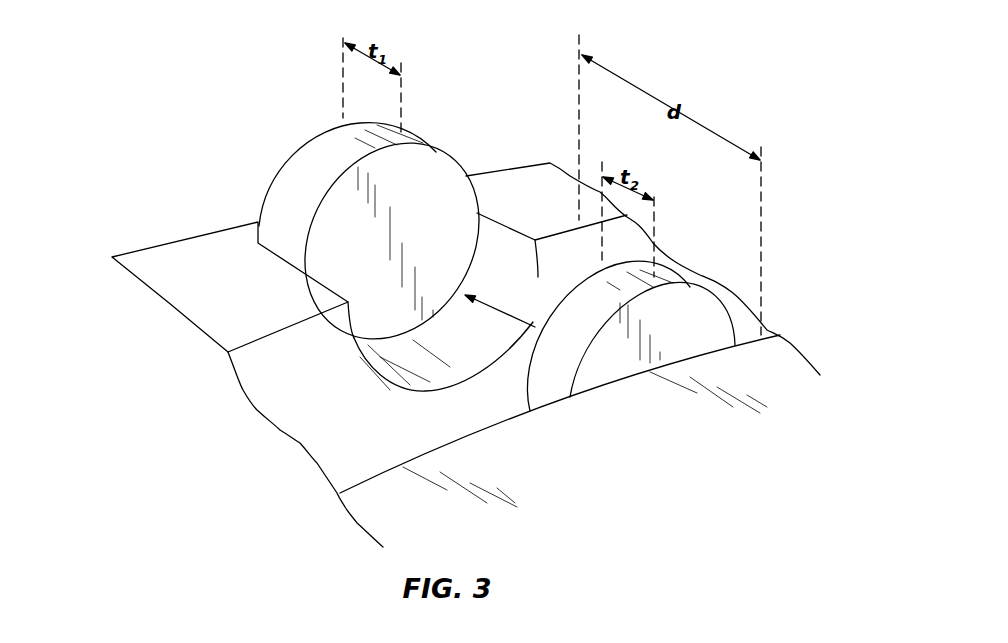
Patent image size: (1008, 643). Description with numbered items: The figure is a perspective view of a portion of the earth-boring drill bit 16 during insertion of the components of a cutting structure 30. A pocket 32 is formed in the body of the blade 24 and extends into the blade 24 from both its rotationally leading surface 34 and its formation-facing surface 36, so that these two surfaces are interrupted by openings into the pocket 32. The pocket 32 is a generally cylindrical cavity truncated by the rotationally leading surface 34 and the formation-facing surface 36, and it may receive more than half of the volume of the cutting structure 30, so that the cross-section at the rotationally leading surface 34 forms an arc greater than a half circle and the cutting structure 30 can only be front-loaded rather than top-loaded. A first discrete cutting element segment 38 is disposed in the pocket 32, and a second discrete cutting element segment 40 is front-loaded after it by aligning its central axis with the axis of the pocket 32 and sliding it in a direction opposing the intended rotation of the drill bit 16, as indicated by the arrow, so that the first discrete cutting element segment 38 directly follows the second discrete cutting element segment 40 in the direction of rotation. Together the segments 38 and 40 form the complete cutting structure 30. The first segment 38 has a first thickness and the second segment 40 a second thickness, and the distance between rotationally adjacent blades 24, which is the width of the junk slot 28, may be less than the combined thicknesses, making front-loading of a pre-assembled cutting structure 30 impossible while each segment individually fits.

The drill bit 16 is at (140, 110).
The blade 24 is at (197, 262).
The junk slot 28 is at (345, 462).
The cutting structure 30 is at (478, 115).
The pocket 32 is at (560, 414).
The rotationally leading surface 34 is at (355, 463).
The formation-facing surface 36 is at (227, 303).
The first discrete cutting element segment 38 is at (452, 213).
The second discrete cutting element segment 40 is at (590, 293).